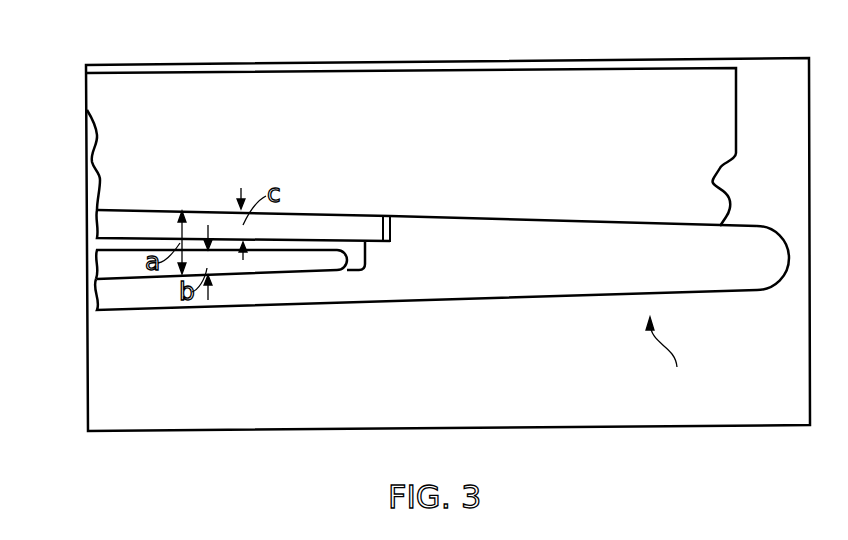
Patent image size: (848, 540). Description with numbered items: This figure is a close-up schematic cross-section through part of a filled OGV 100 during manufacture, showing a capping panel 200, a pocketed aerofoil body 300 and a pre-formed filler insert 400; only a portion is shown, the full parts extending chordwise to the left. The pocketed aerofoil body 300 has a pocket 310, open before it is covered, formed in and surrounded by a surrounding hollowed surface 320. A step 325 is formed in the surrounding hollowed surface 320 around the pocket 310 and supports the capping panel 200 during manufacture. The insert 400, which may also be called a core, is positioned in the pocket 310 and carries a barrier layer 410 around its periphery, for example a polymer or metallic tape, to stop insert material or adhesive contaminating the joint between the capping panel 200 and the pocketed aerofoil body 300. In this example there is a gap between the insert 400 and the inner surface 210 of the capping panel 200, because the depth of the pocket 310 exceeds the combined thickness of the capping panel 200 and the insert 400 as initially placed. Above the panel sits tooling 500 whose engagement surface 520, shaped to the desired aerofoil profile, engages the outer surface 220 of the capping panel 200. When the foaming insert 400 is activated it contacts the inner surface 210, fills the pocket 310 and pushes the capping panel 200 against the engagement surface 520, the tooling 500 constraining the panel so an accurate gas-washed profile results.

The filled OGV 100 is at (676, 355).
The capping panel 200 is at (108, 225).
The inner surface of the capping panel 210 is at (322, 242).
The outer surface of the capping panel 220 is at (127, 207).
The pocketed aerofoil body 300 is at (708, 283).
The pocket 310 is at (365, 262).
The surrounding hollowed surface 320 is at (535, 221).
The step 325 is at (390, 230).
The pre-formed filler insert 400 is at (280, 263).
The barrier layer 410 is at (245, 275).
The tooling 500 is at (640, 83).
The engagement surface 520 is at (162, 207).